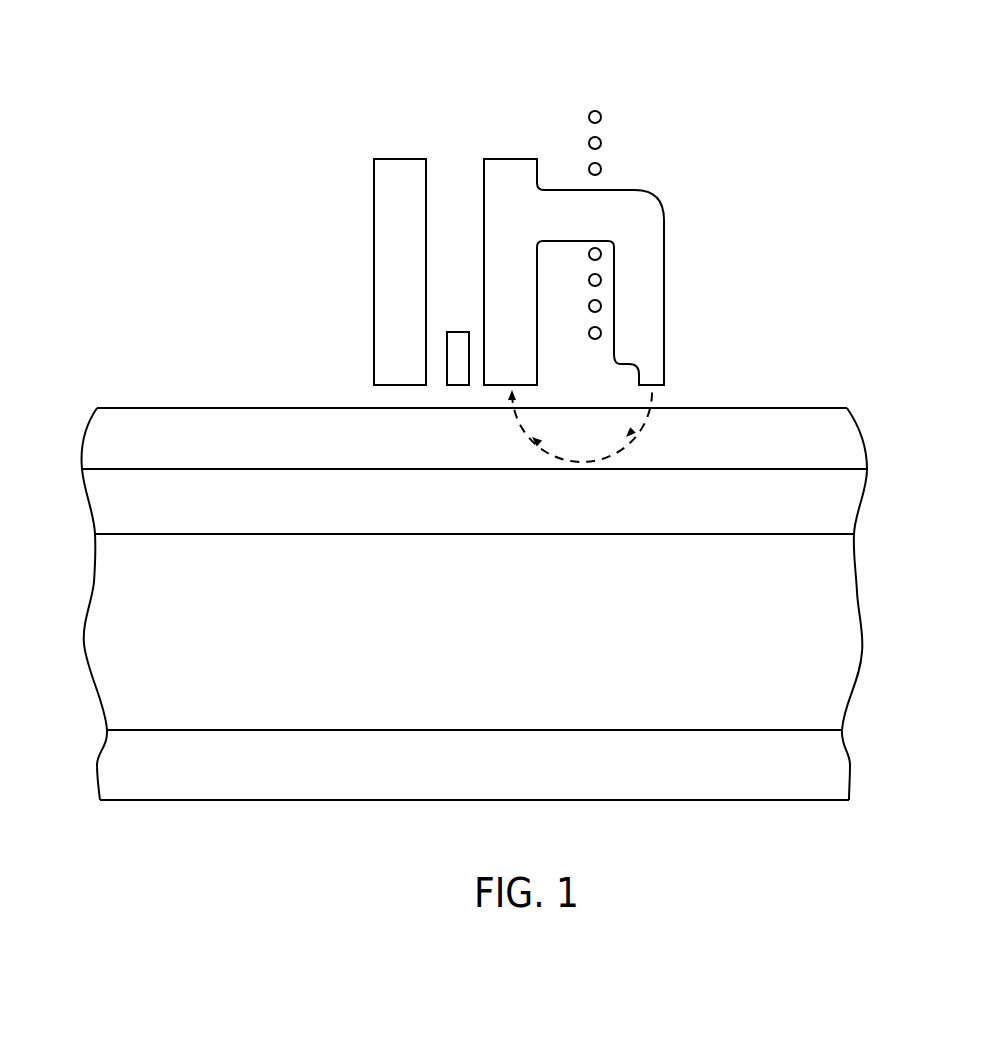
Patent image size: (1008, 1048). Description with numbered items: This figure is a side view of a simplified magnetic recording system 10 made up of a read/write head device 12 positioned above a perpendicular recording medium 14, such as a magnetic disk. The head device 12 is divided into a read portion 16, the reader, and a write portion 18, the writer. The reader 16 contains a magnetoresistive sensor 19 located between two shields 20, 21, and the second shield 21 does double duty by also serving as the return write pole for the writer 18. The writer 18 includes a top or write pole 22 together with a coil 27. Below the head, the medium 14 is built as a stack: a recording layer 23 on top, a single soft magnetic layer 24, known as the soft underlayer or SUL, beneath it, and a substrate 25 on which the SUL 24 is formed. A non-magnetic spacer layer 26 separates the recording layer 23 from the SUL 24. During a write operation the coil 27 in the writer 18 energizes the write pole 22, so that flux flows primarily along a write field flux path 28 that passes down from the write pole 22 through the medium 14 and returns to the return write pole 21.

The magnetic recording system 10 is at (712, 73).
The read/write head device 12 is at (705, 203).
The perpendicular recording medium 14 is at (860, 592).
The read portion 16 is at (372, 82).
The write portion 18 is at (482, 50).
The magnetoresistive sensor 19 is at (453, 330).
The shield 20 is at (372, 212).
The shield 21 is at (506, 157).
The write pole 22 is at (662, 296).
The recording layer 23 is at (82, 436).
The soft magnetic layer 24 is at (98, 643).
The substrate 25 is at (827, 773).
The non-magnetic spacer layer 26 is at (100, 497).
The coil 27 is at (617, 142).
The write field flux path 28 is at (523, 428).